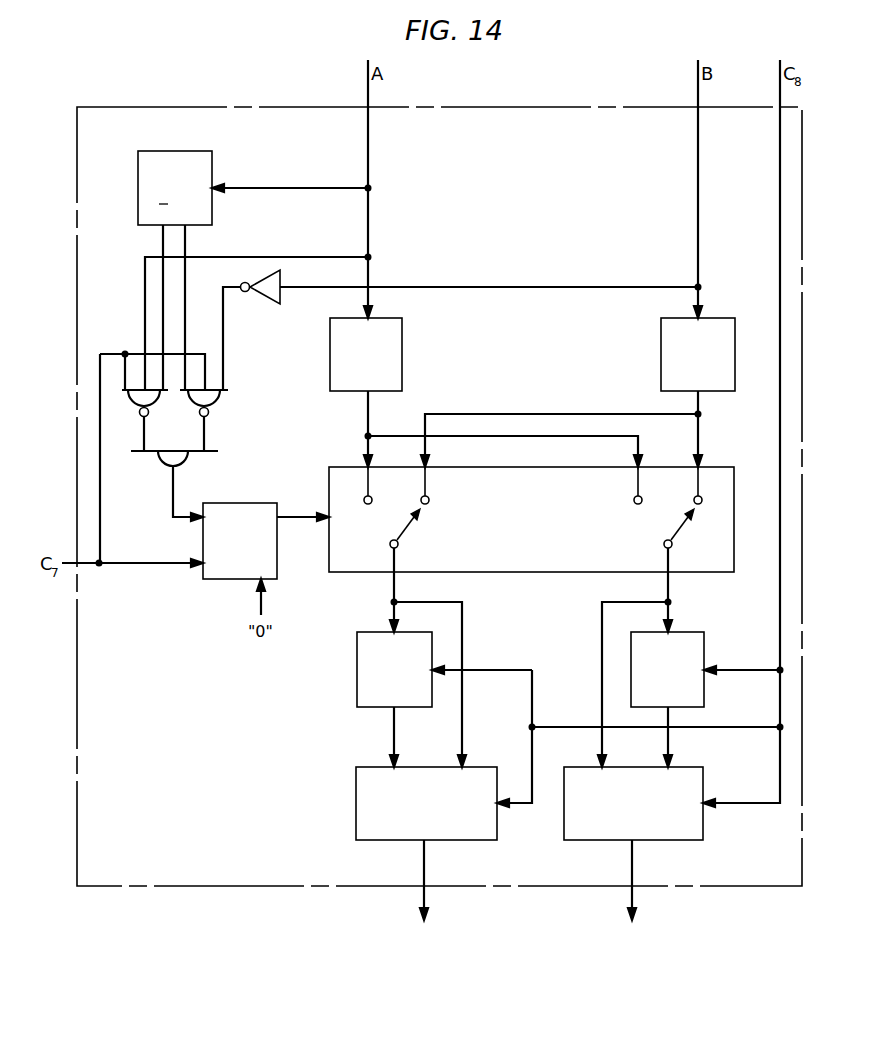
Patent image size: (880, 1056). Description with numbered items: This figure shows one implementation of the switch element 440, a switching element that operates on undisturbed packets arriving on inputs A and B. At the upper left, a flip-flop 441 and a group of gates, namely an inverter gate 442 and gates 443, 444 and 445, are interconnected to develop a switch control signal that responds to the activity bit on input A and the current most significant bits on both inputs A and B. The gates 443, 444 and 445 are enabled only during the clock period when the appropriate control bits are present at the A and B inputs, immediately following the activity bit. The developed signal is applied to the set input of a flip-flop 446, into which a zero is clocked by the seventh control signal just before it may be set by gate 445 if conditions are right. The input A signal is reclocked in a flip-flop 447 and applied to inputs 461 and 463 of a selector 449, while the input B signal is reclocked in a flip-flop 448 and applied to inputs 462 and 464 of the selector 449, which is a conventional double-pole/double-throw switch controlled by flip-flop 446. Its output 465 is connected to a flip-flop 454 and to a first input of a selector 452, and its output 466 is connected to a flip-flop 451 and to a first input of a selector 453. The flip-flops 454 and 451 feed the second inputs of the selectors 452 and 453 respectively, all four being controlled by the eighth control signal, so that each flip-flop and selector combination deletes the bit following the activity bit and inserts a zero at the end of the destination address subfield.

The switch element 440 is at (138, 107).
The flip-flop 441 is at (186, 151).
The gate 442 is at (268, 302).
The gate 443 is at (128, 400).
The gate 444 is at (218, 400).
The gate 445 is at (188, 462).
The flip-flop 446 is at (236, 503).
The flip-flop 447 is at (402, 330).
The flip-flop 448 is at (661, 336).
The selector 449 is at (534, 507).
The flip-flop 451 is at (704, 648).
The selector 452 is at (356, 837).
The selector 453 is at (564, 837).
The flip-flop 454 is at (357, 643).
The input 461 is at (366, 458).
The input 462 is at (432, 454).
The input 463 is at (632, 458).
The input 464 is at (704, 454).
The output 465 is at (392, 590).
The output 466 is at (672, 590).